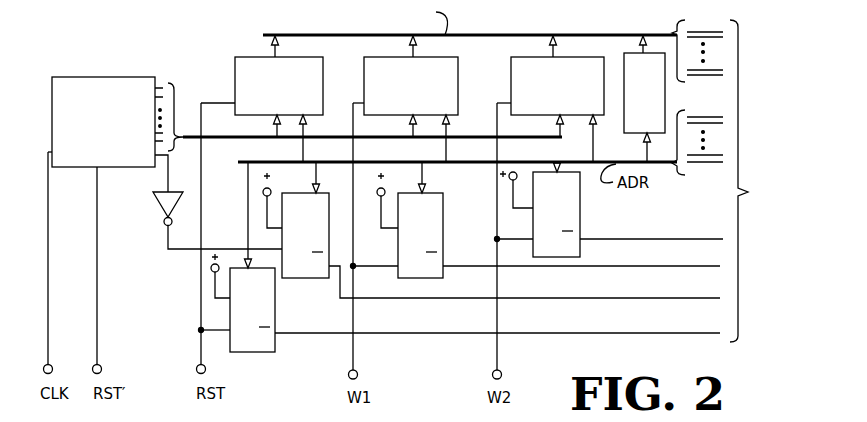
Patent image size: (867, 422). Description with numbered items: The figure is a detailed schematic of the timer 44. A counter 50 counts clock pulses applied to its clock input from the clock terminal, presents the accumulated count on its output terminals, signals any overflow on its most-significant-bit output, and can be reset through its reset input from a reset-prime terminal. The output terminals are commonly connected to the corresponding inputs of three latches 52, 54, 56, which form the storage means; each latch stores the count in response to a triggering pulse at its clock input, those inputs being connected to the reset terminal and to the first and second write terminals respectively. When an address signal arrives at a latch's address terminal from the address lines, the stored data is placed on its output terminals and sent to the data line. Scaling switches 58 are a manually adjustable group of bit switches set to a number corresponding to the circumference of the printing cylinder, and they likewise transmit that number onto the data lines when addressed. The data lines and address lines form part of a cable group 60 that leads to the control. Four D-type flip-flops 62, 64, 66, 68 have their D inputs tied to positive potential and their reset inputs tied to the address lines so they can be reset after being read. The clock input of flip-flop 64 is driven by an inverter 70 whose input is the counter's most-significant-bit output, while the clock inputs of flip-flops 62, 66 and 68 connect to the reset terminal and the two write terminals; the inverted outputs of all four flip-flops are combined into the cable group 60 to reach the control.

The timer 44 is at (470, 17).
The counter 50 is at (133, 77).
The latch 52 is at (252, 57).
The latch 54 is at (378, 57).
The latch 56 is at (533, 57).
The scaling switches 58 is at (632, 53).
The cable group 60 is at (723, 181).
The D-type flip-flop 62 is at (264, 354).
The D-type flip-flop 64 is at (292, 280).
The D-type flip-flop 66 is at (445, 280).
The D-type flip-flop 68 is at (583, 211).
The inverter 70 is at (156, 210).